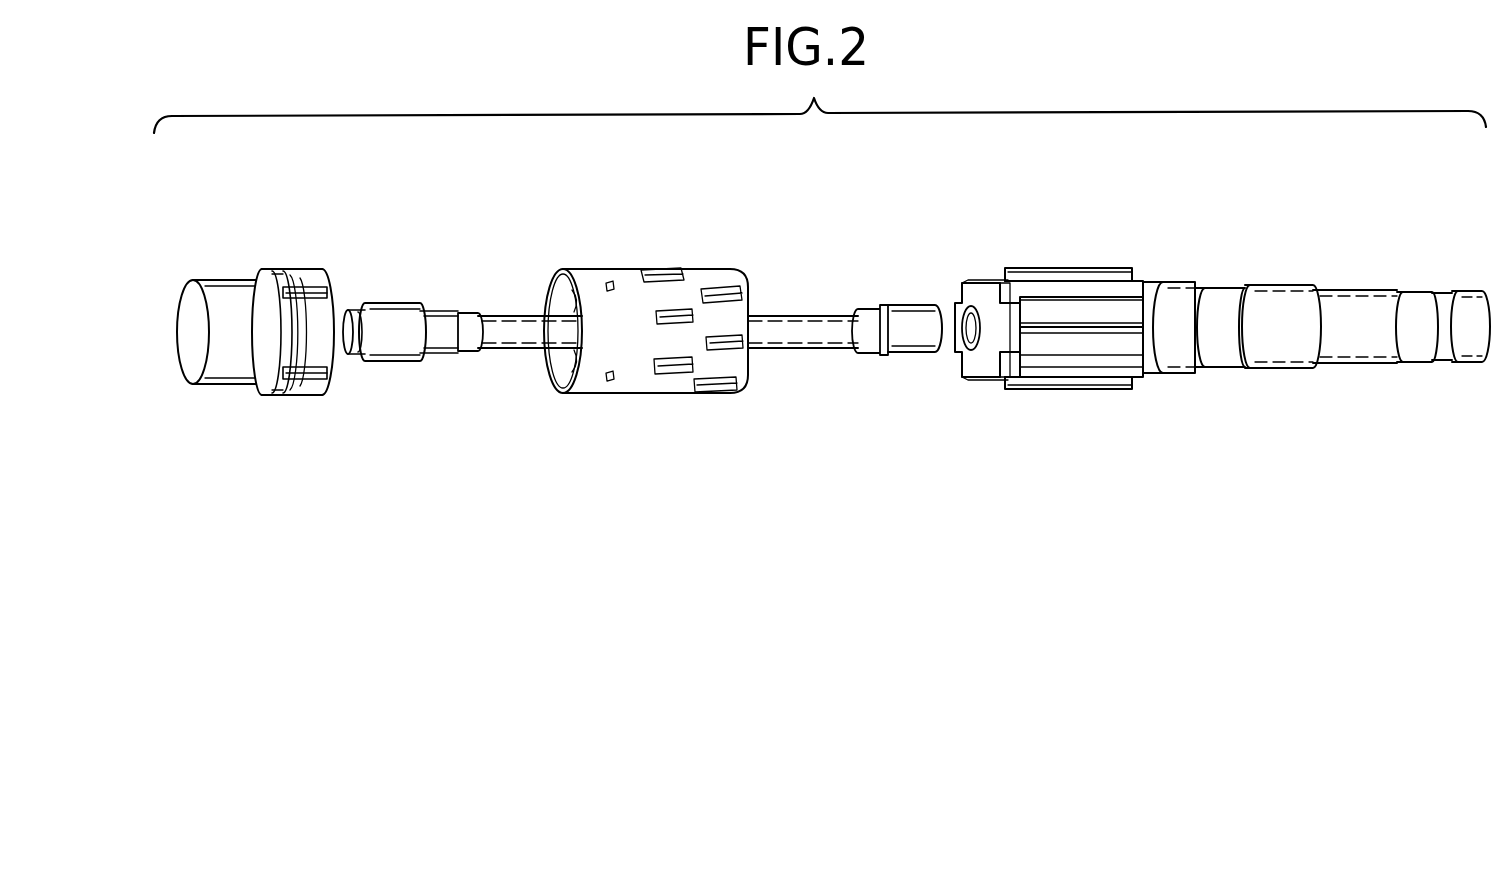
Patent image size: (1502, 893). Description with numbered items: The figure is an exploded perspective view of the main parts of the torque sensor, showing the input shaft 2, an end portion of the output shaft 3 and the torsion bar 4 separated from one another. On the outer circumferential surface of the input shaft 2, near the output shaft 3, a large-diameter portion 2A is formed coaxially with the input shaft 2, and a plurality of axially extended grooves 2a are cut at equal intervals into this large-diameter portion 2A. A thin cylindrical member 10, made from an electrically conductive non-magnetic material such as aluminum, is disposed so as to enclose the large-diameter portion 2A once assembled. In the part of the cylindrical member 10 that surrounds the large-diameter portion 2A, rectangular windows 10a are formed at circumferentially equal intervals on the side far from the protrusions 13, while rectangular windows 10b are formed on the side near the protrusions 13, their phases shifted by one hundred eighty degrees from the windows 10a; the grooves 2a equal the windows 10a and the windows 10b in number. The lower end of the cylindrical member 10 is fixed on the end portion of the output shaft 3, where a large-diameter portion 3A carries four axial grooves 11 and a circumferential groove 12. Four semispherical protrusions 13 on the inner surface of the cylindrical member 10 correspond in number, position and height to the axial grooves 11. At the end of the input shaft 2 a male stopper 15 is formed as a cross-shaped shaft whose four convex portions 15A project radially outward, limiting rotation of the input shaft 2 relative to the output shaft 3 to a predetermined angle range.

The input shaft 2 is at (1278, 305).
The large-diameter portion 2A is at (1061, 298).
The grooves 2a is at (1092, 343).
The output shaft 3 is at (225, 362).
The large-diameter portion 3A is at (255, 278).
The torsion bar 4 is at (806, 332).
The cylindrical member 10 is at (666, 326).
The rectangular windows 10a is at (752, 357).
The rectangular windows 10b is at (657, 352).
The axial grooves 11 is at (322, 292).
The circumferential groove 12 is at (290, 335).
The semispherical protrusions 13 is at (562, 384).
The male stopper 15 is at (950, 341).
The convex portions 15A is at (958, 310).